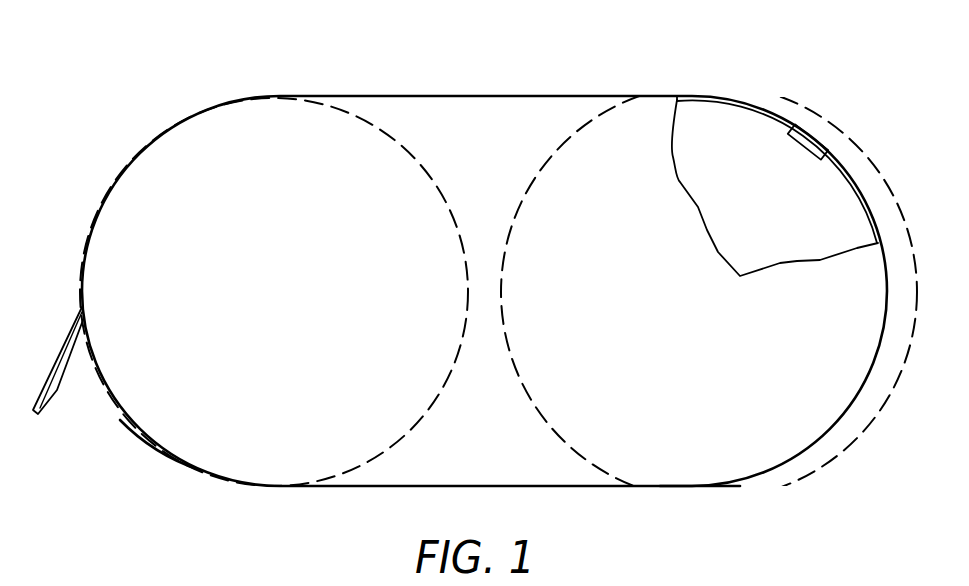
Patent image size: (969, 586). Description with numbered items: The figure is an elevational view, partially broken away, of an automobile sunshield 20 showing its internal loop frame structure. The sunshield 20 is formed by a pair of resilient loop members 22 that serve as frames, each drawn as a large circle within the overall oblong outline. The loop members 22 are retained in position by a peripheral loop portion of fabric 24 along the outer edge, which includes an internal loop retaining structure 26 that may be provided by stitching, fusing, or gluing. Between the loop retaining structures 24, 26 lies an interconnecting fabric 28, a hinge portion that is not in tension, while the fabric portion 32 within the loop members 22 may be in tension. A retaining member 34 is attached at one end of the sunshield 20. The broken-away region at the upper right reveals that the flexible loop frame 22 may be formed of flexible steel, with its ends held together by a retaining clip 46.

The sunshield 20 is at (250, 160).
The resilient loop member 22 is at (727, 97).
The peripheral loop portion of fabric 24 is at (168, 457).
The internal loop retaining structure 26 is at (383, 130).
The interconnecting fabric 28 is at (495, 125).
The fabric portion 32 is at (717, 456).
The retaining member 34 is at (57, 392).
The retaining clip 46 is at (815, 136).